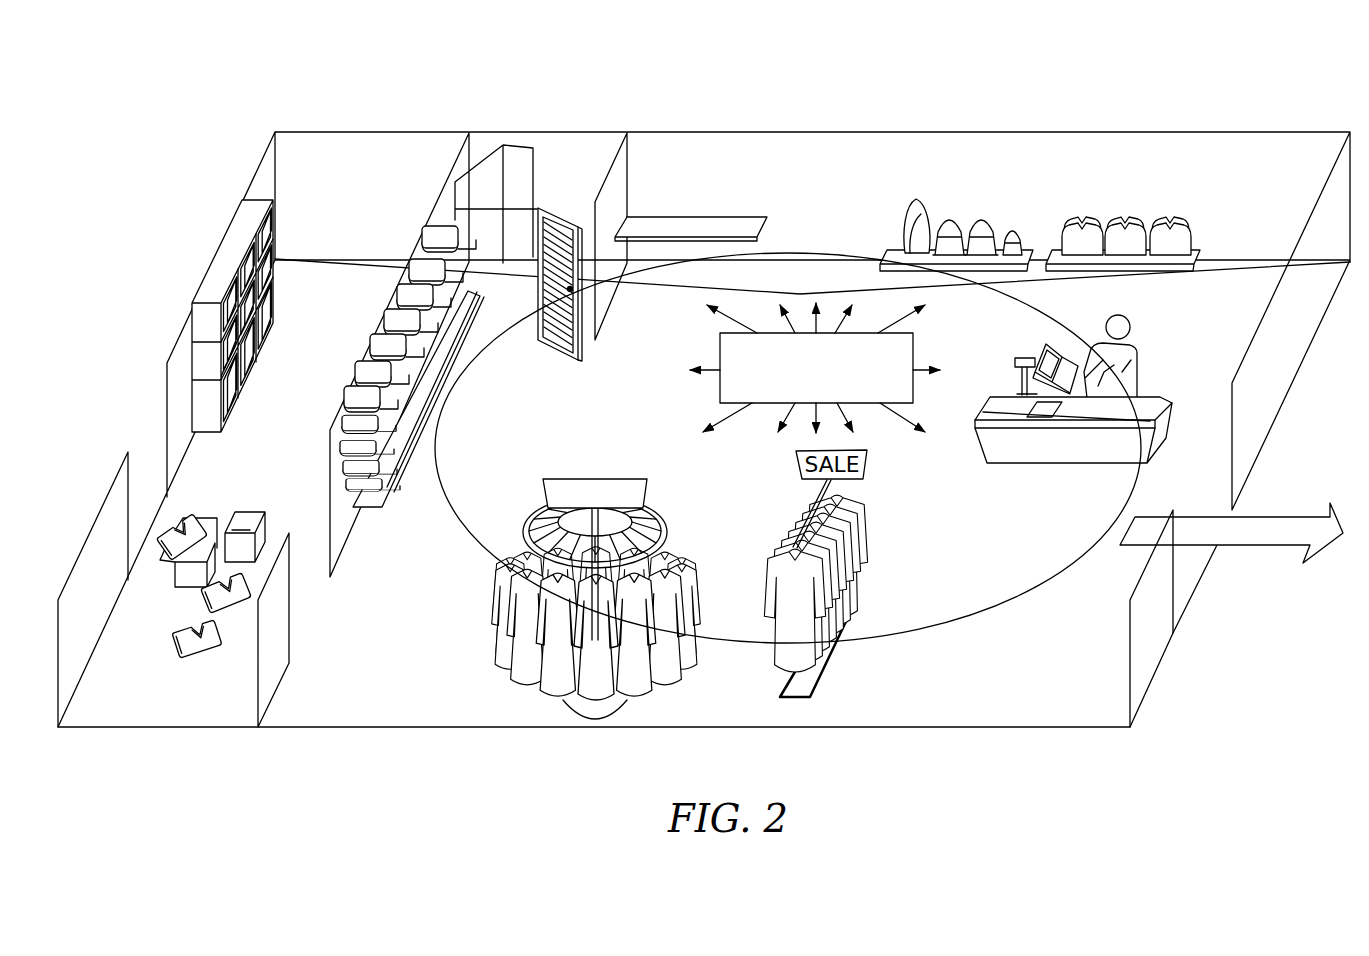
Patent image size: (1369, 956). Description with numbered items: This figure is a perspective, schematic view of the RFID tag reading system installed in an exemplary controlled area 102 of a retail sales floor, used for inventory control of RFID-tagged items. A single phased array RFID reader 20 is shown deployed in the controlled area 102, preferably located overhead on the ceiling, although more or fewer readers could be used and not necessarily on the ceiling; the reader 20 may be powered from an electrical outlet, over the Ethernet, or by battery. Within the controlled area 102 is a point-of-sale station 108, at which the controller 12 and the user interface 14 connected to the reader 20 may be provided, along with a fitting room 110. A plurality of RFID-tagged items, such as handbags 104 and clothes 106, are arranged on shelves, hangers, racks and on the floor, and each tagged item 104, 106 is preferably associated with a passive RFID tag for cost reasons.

The controller 12 is at (1057, 347).
The user interface 14 is at (1036, 347).
The phased array RFID reader 20 is at (761, 410).
The controlled area 102 is at (1006, 727).
The handbags 104 is at (1027, 193).
The clothes 106 is at (513, 700).
The point-of-sale station 108 is at (1170, 378).
The fitting room 110 is at (576, 156).